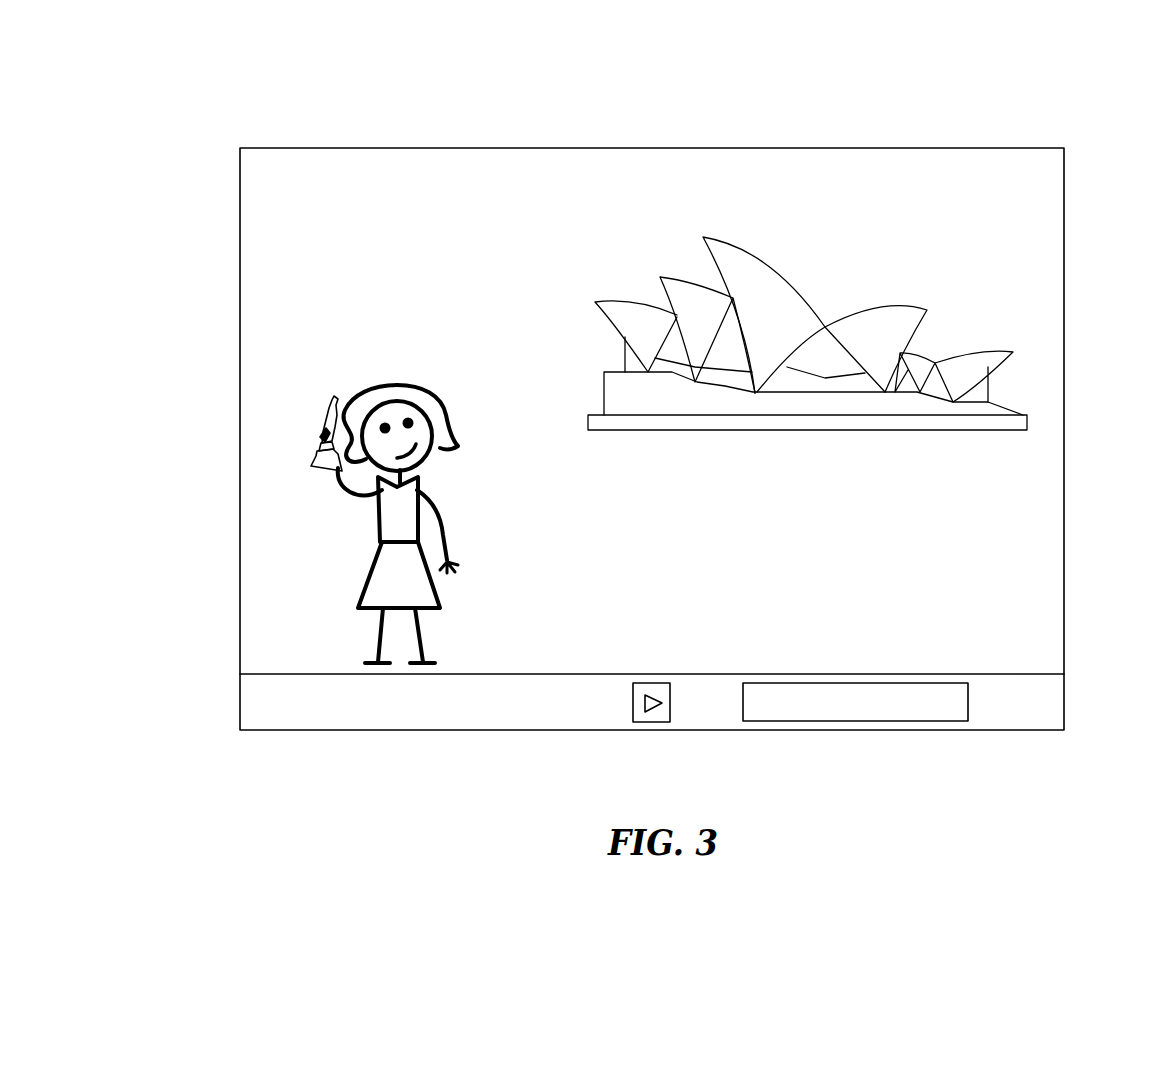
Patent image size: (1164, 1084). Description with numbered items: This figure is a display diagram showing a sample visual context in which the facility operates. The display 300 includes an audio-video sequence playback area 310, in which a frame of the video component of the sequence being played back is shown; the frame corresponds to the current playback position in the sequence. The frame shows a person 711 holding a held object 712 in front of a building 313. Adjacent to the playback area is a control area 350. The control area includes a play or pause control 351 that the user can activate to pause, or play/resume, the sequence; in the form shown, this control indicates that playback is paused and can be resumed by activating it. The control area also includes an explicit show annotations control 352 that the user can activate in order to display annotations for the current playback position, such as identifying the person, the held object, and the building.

The display 300 is at (321, 78).
The audio-video sequence playback area 310 is at (240, 148).
The building 313 is at (768, 266).
The control area 350 is at (1068, 674).
The play or pause control 351 is at (660, 683).
The show annotations control 352 is at (930, 683).
The person 711 is at (436, 395).
The held object 712 is at (332, 400).